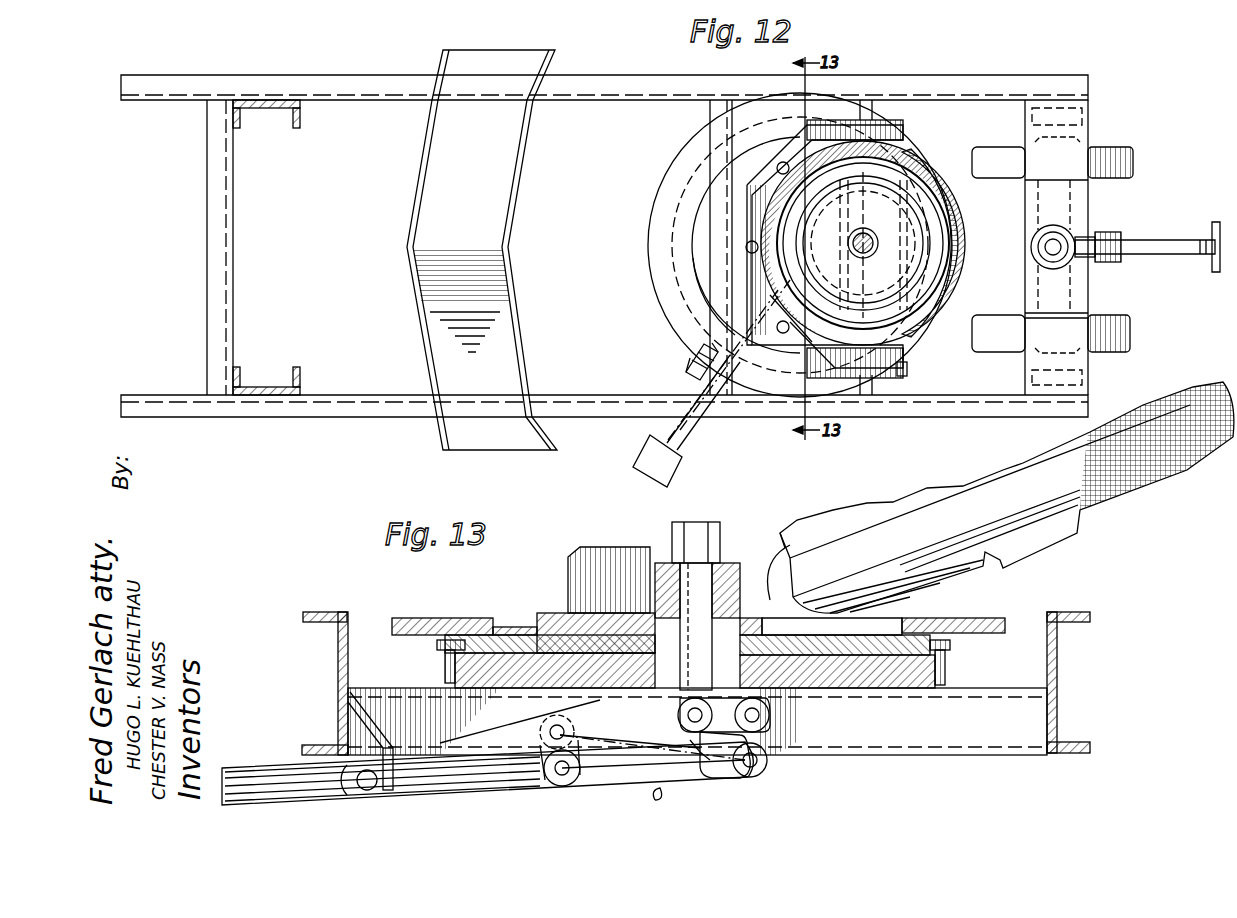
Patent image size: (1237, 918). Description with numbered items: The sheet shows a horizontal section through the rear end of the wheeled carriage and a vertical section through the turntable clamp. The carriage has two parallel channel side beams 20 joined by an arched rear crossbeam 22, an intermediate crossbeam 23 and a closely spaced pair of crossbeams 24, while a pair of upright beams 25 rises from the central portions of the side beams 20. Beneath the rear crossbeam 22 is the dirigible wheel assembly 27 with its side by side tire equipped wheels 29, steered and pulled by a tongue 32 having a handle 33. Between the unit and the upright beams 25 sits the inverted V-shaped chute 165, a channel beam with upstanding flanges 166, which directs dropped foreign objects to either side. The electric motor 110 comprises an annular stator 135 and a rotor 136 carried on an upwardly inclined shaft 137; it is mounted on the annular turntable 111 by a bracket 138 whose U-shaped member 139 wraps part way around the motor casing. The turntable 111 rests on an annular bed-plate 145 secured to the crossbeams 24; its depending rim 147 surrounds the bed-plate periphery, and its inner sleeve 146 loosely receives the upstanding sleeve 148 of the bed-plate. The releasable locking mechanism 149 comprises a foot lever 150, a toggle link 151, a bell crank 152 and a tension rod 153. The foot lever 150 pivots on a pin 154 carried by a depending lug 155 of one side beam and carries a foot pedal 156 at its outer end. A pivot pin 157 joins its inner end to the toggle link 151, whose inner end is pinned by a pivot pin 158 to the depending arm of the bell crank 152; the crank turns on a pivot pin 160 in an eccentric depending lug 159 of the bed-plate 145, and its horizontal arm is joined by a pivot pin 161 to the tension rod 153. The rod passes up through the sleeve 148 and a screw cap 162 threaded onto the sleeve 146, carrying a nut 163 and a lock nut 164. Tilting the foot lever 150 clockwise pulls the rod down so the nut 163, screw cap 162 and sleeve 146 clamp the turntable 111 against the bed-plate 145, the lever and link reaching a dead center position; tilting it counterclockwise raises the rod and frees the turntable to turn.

In FIG. 12, the side beams 20 is at (345, 430).
In FIG. 13, the side beams 20 is at (1057, 645).
In FIG. 12, the rear crossbeam 22 is at (1075, 125).
In FIG. 12, the intermediate crossbeam 23 is at (233, 340).
In FIG. 12, the intermediate crossbeams 24 is at (710, 118).
In FIG. 13, the intermediate crossbeams 24 is at (930, 756).
In FIG. 12, the upright beams 25 is at (300, 118).
In FIG. 12, the dirigible wheel assembly 27 is at (1097, 305).
In FIG. 12, the tire equipped wheels 29 is at (1120, 146).
In FIG. 12, the tongue 32 is at (1158, 246).
In FIG. 12, the handle 33 is at (1216, 222).
In FIG. 12, the electric motor 110 is at (905, 168).
In FIG. 13, the electric motor 110 is at (1145, 478).
In FIG. 12, the turntable 111 is at (745, 260).
In FIG. 13, the turntable 111 is at (505, 628).
In FIG. 12, the annular stator 135 is at (920, 285).
In FIG. 12, the rotor 136 is at (905, 345).
In FIG. 12, the shaft 137 is at (866, 252).
In FIG. 12, the bracket 138 is at (700, 300).
In FIG. 12, the U-shaped member 139 is at (908, 368).
In FIG. 13, the bed-plate 145 is at (920, 690).
In FIG. 13, the sleeve 146 is at (782, 580).
In FIG. 13, the depending rim 147 is at (445, 668).
In FIG. 13, the upstanding sleeve 148 is at (760, 628).
In FIG. 13, the locking mechanism 149 is at (650, 790).
In FIG. 12, the foot lever 150 is at (690, 430).
In FIG. 13, the foot lever 150 is at (252, 770).
In FIG. 12, the toggle link 151 is at (745, 257).
In FIG. 13, the toggle link 151 is at (570, 790).
In FIG. 13, the bell crank 152 is at (760, 760).
In FIG. 13, the tension rod 153 is at (680, 710).
In FIG. 13, the pivot pin 154 is at (357, 781).
In FIG. 12, the depending lug 155 is at (688, 372).
In FIG. 13, the depending lug 155 is at (362, 740).
In FIG. 12, the foot pedal 156 is at (682, 462).
In FIG. 13, the pivot pin 157 is at (570, 760).
In FIG. 13, the pivot pin 158 is at (755, 775).
In FIG. 13, the depending lug 159 is at (795, 700).
In FIG. 13, the pivot pin 160 is at (770, 716).
In FIG. 13, the pivot pin 161 is at (705, 775).
In FIG. 13, the screw cap 162 is at (605, 548).
In FIG. 13, the nut 163 is at (720, 560).
In FIG. 13, the lock nut 164 is at (715, 522).
In FIG. 12, the inverted V-shaped chute 165 is at (490, 220).
In FIG. 12, the upstanding flanges 166 is at (508, 248).